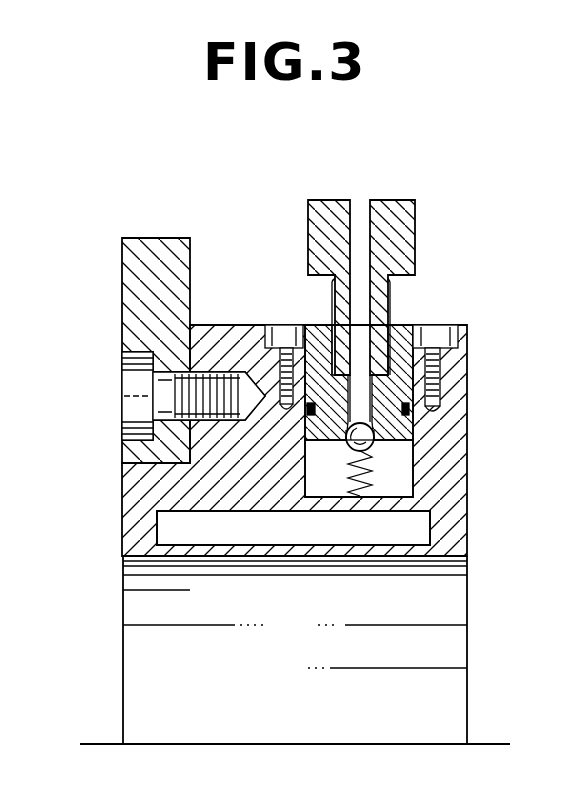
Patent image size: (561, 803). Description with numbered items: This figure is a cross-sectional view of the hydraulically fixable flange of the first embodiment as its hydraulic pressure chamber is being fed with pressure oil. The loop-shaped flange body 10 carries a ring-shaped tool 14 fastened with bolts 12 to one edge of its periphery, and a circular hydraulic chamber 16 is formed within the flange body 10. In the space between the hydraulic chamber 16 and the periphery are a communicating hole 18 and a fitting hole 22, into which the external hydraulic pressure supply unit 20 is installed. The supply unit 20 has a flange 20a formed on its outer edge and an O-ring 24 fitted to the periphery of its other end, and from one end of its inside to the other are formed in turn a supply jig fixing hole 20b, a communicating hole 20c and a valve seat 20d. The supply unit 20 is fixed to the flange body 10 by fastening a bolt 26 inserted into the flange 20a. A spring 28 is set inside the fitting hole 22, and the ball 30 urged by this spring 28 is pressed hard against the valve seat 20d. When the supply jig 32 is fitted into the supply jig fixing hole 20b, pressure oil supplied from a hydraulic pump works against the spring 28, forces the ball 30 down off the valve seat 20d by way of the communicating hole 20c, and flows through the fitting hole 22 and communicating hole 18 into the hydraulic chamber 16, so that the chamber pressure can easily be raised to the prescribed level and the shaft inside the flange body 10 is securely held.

The flange body 10 is at (222, 327).
The bolt 12 is at (125, 408).
The ring-shaped tool 14 is at (128, 251).
The hydraulic chamber 16 is at (240, 533).
The communicating hole 18 is at (350, 512).
The external hydraulic pressure supply unit 20 is at (405, 326).
The flange 20a is at (446, 364).
The supply jig fixing hole 20b is at (334, 300).
The communicating hole 20c is at (400, 433).
The valve seat 20d is at (347, 450).
The fitting hole 22 is at (312, 476).
The O-ring 24 is at (448, 412).
The bolt 26 is at (284, 330).
The spring 28 is at (368, 487).
The ball 30 is at (372, 451).
The supply jig 32 is at (405, 228).